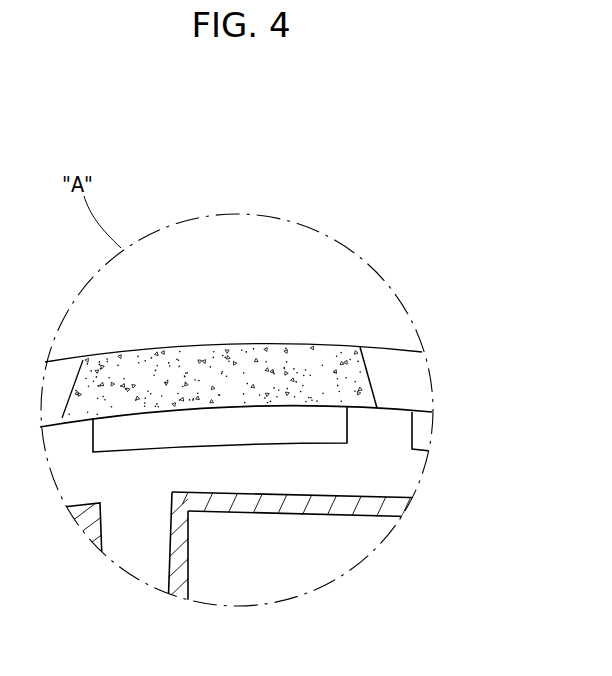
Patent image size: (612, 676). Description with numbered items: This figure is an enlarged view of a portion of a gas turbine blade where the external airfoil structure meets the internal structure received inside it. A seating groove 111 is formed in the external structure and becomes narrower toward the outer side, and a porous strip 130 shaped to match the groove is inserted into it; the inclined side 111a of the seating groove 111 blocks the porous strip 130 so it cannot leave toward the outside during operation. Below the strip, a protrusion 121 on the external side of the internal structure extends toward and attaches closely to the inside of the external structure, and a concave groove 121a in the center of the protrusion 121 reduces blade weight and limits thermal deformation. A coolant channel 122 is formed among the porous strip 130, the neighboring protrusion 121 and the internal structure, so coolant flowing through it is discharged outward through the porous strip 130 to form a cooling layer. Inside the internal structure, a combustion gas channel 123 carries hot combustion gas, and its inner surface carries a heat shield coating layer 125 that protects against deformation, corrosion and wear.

The seating groove 111 is at (242, 372).
The inclined side 111a is at (372, 380).
The porous strip 130 is at (291, 362).
The protrusion 121 is at (393, 427).
The concave groove 121a is at (418, 432).
The coolant channel 122 is at (137, 433).
The combustion gas channel 123 is at (268, 572).
The heat shield coating layer 125 is at (180, 566).